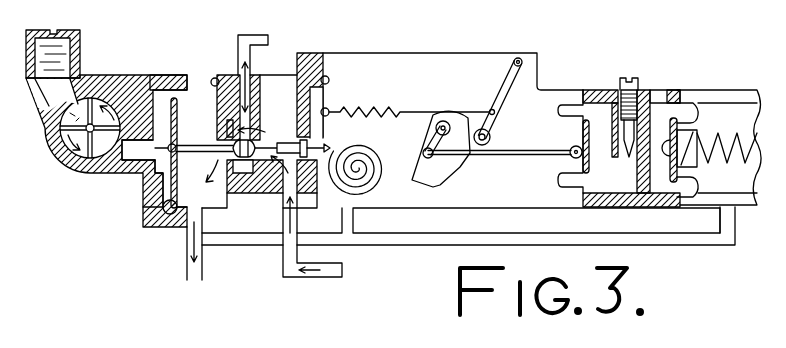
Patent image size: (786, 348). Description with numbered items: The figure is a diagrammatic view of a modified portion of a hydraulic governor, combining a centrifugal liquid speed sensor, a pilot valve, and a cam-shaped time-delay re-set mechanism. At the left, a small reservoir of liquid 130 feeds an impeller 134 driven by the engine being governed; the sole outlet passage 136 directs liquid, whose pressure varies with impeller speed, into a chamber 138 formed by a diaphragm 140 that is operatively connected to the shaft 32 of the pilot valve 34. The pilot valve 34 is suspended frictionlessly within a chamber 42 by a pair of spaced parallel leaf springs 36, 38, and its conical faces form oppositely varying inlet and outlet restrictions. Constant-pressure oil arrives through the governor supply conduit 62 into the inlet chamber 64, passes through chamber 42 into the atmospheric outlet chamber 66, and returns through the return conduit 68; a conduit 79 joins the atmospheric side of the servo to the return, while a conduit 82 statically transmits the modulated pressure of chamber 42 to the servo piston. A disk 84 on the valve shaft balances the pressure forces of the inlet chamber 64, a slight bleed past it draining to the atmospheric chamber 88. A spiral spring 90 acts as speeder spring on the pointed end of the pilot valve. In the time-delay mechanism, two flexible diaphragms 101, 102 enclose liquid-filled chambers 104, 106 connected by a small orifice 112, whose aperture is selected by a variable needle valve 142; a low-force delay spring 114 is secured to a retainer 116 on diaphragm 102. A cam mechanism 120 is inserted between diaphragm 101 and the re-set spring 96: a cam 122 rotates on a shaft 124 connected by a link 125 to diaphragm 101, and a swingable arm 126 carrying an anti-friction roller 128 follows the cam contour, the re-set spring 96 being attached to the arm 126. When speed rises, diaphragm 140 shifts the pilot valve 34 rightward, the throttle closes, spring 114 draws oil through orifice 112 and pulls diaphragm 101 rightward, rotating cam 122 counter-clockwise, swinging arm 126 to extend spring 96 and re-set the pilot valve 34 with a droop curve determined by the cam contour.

The shaft 32 is at (40, 127).
The pilot valve 34 is at (242, 190).
The leaf spring 36 is at (213, 110).
The leaf spring 38 is at (320, 100).
The chamber 42 is at (247, 177).
The governor supply conduit 62 is at (283, 260).
The inlet chamber 64 is at (278, 78).
The atmospheric outlet chamber 66 is at (192, 79).
The return conduit 68 is at (187, 267).
The conduit 79 is at (633, 240).
The conduit 82 is at (255, 32).
The disk 84 is at (312, 137).
The atmospheric chamber 88 is at (421, 30).
The spiral spring 90 is at (376, 186).
The re-set spring 96 is at (380, 107).
The diaphragm 101 is at (566, 103).
The diaphragm 102 is at (700, 90).
The chamber 104 is at (592, 207).
The chamber 106 is at (657, 110).
The orifice 112 is at (630, 152).
The delay spring 114 is at (710, 133).
The retainer 116 is at (682, 170).
The cam mechanism 120 is at (476, 173).
The cam 122 is at (440, 185).
The shaft 124 is at (443, 118).
The link 125 is at (532, 160).
The swingable arm 126 is at (487, 67).
The anti-friction roller 128 is at (493, 135).
The reservoir of liquid 130 is at (80, 38).
The impeller 134 is at (80, 167).
The outlet passage 136 is at (140, 150).
The chamber 138 is at (153, 197).
The diaphragm 140 is at (172, 220).
The variable needle valve 142 is at (633, 78).